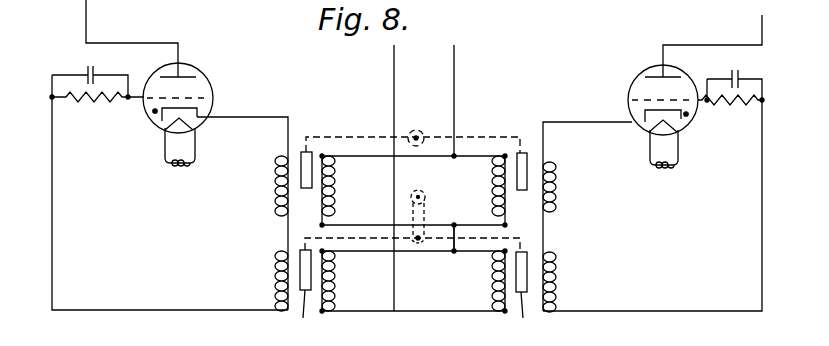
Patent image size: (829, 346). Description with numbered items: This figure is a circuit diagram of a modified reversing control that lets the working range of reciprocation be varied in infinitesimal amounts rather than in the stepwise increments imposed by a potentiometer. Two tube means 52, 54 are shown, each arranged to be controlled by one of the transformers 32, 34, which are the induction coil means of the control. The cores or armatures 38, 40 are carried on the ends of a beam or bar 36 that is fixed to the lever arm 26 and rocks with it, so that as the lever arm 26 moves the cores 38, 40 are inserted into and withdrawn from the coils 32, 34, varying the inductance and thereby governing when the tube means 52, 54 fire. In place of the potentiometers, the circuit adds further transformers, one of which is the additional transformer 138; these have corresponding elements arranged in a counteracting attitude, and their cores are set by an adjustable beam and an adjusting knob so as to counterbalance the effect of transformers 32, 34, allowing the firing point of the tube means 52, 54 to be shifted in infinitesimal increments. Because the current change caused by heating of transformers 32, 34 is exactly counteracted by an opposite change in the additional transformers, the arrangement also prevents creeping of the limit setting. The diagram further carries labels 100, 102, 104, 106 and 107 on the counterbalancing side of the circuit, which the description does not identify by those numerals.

The tube means 52 is at (208, 62).
The tube means 54 is at (631, 74).
The resistor 102 is at (301, 153).
The resistor 104 is at (527, 163).
The dashed mechanical coupling 106 is at (498, 133).
The pivot 107 is at (421, 128).
The lever arm 26 is at (431, 216).
The beam or bar 36 is at (472, 242).
The additional transformer 138 is at (276, 187).
The primary winding 100 is at (555, 191).
The induction coil means 32 is at (277, 284).
The induction coil means 34 is at (555, 283).
The core or armature 38 is at (302, 293).
The core or armature 40 is at (520, 294).